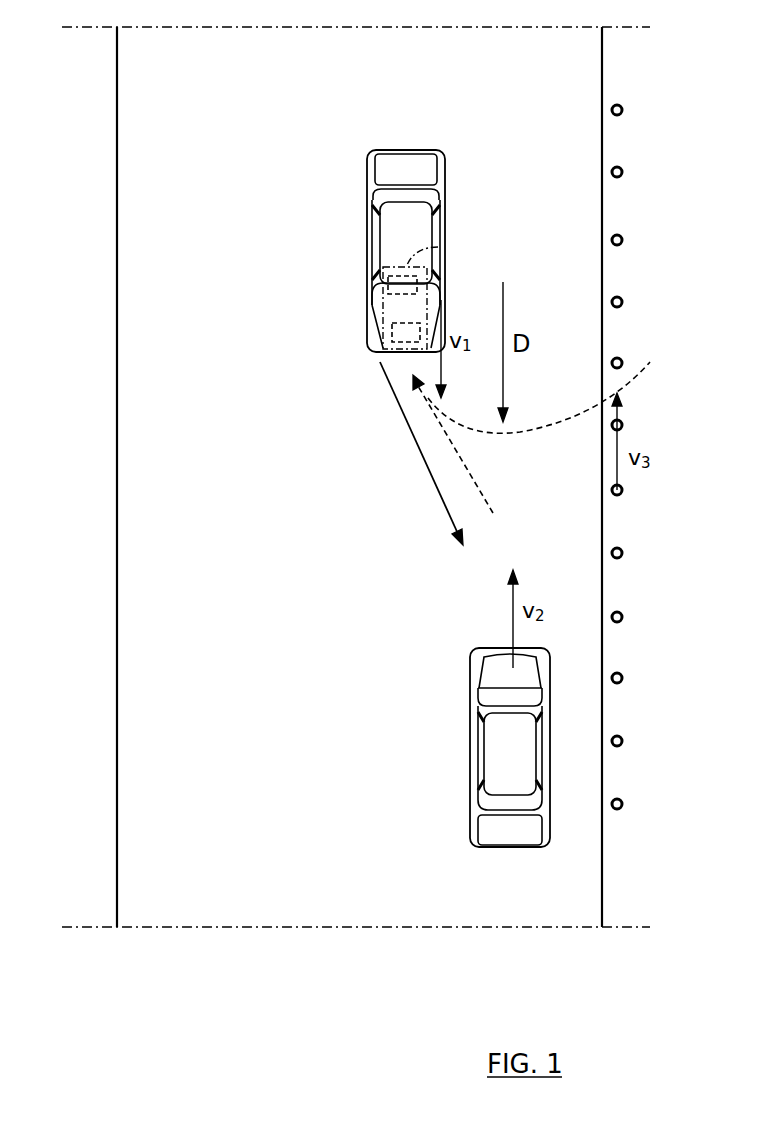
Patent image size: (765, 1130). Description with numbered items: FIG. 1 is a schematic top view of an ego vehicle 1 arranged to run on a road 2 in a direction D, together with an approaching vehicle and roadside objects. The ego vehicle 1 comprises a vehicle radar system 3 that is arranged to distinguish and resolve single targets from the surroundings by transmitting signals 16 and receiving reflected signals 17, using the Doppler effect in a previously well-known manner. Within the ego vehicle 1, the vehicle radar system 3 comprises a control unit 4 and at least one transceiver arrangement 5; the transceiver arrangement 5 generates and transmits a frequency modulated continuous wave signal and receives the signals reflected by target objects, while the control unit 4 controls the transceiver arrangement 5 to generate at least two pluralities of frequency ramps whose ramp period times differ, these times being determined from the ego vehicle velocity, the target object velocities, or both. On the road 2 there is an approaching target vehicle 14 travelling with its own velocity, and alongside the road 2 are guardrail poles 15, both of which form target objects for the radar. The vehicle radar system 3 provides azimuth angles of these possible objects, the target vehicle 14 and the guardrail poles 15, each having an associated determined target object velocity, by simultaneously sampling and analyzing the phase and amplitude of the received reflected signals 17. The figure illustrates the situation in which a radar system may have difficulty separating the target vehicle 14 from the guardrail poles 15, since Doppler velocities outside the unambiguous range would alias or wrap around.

The ego vehicle 1 is at (399, 251).
The road 2 is at (185, 651).
The vehicle radar system 3 is at (438, 247).
The control unit 4 is at (388, 283).
The transceiver arrangement 5 is at (388, 330).
The target vehicle 14 is at (507, 770).
The guardrail poles 15 is at (623, 493).
The transmitted signals 16 is at (432, 477).
The reflected signals 17 is at (556, 384).